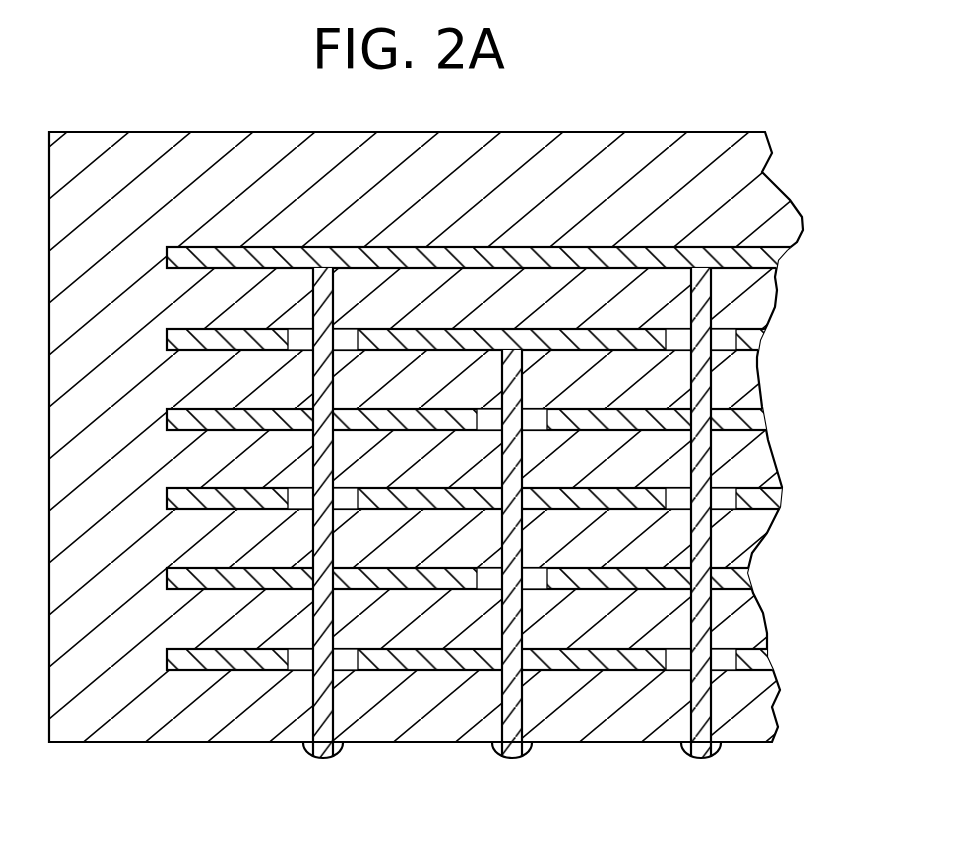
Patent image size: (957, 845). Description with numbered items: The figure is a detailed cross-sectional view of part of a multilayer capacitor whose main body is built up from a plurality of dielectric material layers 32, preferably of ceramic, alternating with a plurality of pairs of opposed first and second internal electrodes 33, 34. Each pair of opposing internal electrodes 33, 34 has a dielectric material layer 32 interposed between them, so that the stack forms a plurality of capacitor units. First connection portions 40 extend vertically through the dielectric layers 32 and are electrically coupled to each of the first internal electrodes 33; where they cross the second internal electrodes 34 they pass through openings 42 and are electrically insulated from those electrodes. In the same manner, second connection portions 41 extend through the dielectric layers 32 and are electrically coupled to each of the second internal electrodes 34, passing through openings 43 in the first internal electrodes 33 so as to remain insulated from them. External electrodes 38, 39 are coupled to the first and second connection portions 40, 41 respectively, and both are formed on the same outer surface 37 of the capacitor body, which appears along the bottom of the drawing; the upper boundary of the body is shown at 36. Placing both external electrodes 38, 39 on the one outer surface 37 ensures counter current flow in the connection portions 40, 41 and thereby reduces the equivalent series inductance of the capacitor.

The dielectric material layers 32 is at (628, 618).
The first internal electrodes 33 is at (185, 341).
The second internal electrodes 34 is at (185, 259).
The top surface 36 is at (590, 131).
The outer surface 37 is at (740, 742).
The external electrode 38 is at (513, 760).
The external electrode 39 is at (323, 760).
The first connection portions 40 is at (502, 378).
The second connection portions 41 is at (312, 292).
The openings 42 is at (730, 348).
The openings 43 is at (533, 413).